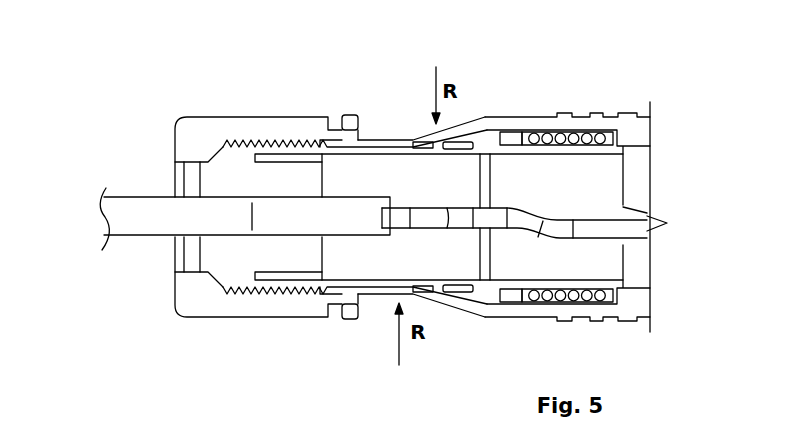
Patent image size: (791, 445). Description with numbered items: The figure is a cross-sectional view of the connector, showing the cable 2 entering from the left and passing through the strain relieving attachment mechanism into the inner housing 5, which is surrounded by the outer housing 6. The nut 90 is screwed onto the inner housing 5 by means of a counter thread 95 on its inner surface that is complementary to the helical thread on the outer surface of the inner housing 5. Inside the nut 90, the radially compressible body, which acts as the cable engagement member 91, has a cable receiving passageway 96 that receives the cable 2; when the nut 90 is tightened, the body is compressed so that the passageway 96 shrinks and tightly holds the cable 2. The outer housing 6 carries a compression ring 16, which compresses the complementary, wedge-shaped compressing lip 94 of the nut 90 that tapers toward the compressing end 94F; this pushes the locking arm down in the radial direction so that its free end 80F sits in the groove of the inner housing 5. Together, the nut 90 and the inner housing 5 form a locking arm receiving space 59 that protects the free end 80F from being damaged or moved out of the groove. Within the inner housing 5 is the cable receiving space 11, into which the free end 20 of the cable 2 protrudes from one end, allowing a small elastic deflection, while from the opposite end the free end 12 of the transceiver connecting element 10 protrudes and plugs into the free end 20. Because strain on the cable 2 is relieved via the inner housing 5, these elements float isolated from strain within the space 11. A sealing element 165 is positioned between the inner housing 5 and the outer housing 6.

The cable 2 is at (340, 222).
The inner housing 5 is at (507, 284).
The outer housing 6 is at (477, 298).
The transceiver connecting element 10 is at (628, 284).
The cable receiving space 11 is at (603, 180).
The free end of the transceiver connecting element 12 is at (457, 215).
The compression ring 16 is at (356, 116).
The free end of the cable 20 is at (365, 210).
The locking arm receiving space 59 is at (323, 142).
The free end of the locking arm 80F is at (335, 140).
The nut 90 is at (191, 124).
The cable engagement member 91 is at (237, 258).
The compressing lip 94 is at (348, 114).
The compressing end 94F is at (360, 130).
The counter thread 95 is at (238, 138).
The cable receiving passageway 96 is at (199, 237).
The sealing element 165 is at (455, 142).